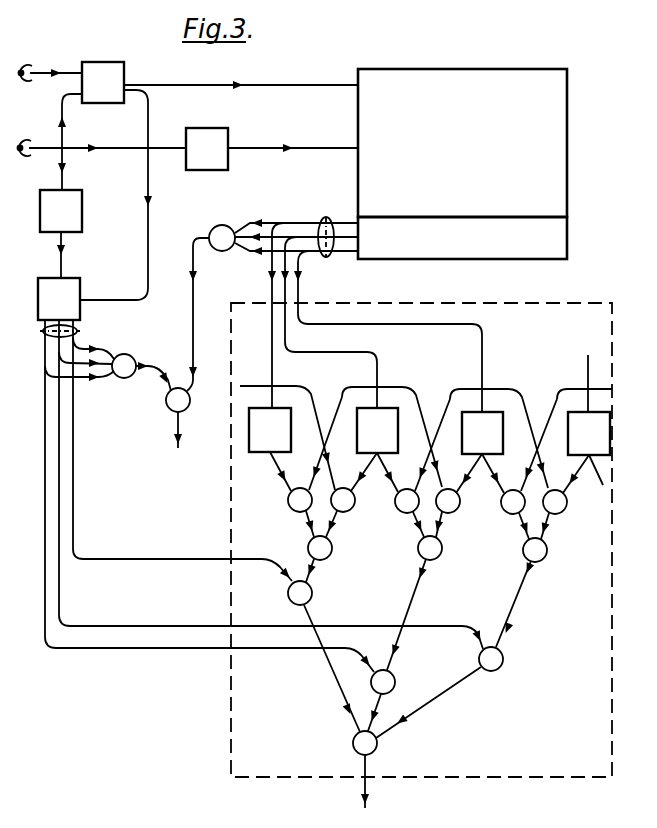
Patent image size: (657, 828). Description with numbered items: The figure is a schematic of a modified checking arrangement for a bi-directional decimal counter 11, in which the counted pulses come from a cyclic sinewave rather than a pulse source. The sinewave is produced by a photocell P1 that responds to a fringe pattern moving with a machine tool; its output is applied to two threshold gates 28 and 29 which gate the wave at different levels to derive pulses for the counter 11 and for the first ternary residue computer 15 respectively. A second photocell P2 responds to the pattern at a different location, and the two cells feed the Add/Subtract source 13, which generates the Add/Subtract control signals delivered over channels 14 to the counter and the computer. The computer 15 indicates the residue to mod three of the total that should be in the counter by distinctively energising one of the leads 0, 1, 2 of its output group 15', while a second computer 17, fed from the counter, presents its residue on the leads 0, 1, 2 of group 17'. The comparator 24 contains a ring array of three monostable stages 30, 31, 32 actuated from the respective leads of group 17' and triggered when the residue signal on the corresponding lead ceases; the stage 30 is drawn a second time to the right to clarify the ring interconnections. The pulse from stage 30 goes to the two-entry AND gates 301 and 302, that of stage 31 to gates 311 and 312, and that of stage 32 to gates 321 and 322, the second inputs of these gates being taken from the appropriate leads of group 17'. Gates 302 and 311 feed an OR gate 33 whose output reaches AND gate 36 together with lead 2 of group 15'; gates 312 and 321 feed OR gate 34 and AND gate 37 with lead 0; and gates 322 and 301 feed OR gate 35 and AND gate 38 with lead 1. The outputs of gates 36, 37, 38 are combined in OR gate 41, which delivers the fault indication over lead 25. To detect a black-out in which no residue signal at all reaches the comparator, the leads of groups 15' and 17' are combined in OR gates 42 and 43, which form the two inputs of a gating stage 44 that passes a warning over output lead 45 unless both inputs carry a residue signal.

The counter 11 is at (442, 163).
The Add/Subtract source 13 is at (94, 92).
The channels 14 is at (150, 103).
The first ternary residue computer 15 is at (59, 299).
The group of computer output leads 15' is at (76, 329).
The computer 17 is at (462, 238).
The group of leads 17' is at (329, 217).
The comparator 24 is at (525, 351).
The lead 25 is at (367, 780).
The threshold gate 28 is at (198, 158).
The threshold gate 29 is at (52, 220).
The monostable stage 30 is at (261, 439).
The monostable stage 31 is at (368, 439).
The monostable stage 32 is at (473, 441).
The two-entry AND gate 302 is at (288, 499).
The two-entry AND gate 311 is at (351, 510).
The two-entry AND gate 312 is at (401, 511).
The two-entry AND gate 321 is at (458, 511).
The two-entry AND gate 322 is at (506, 511).
The two-entry AND gate 301 is at (564, 511).
The OR gate 33 is at (329, 557).
The OR gate 34 is at (439, 557).
The OR gate 35 is at (544, 559).
The two-entry AND gate 36 is at (288, 594).
The AND gate 37 is at (395, 684).
The AND gate 38 is at (495, 671).
The OR gate 41 is at (356, 745).
The OR gate 42 is at (124, 377).
The OR gate 43 is at (225, 225).
The gating stage 44 is at (168, 400).
The output lead 45 is at (175, 440).
The lead 0 is at (274, 352).
The lead 1 is at (318, 358).
The lead 2 is at (415, 326).
The photocell P1 is at (32, 141).
The second photocell P2 is at (33, 66).